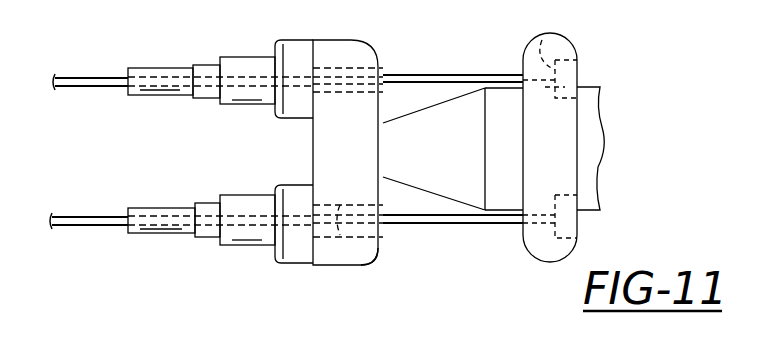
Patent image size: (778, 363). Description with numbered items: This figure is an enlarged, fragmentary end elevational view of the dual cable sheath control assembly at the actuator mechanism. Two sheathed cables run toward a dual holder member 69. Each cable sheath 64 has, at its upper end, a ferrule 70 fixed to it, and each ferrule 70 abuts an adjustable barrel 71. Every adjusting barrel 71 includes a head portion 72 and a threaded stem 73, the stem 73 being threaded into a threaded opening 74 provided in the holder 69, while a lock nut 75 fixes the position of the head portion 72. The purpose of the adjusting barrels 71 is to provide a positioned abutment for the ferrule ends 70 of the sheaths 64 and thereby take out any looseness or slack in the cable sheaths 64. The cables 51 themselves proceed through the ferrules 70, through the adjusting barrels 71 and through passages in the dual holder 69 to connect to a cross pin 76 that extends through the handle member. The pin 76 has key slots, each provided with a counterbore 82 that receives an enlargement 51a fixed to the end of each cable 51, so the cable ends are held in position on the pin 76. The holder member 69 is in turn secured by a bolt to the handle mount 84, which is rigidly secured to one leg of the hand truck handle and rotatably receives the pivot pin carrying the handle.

The cable 51 is at (102, 218).
The enlargement 51a is at (542, 35).
The cable sheath 64 is at (178, 207).
The holder member 69 is at (363, 258).
The ferrule 70 is at (203, 231).
The adjustable barrel 71 is at (240, 245).
The head portion 72 is at (260, 247).
The threaded stem 73 is at (340, 204).
The threaded opening 74 is at (333, 255).
The lock nut 75 is at (293, 188).
The cross pin 76 is at (562, 50).
The counterbore 82 is at (600, 110).
The handle mount 84 is at (468, 183).